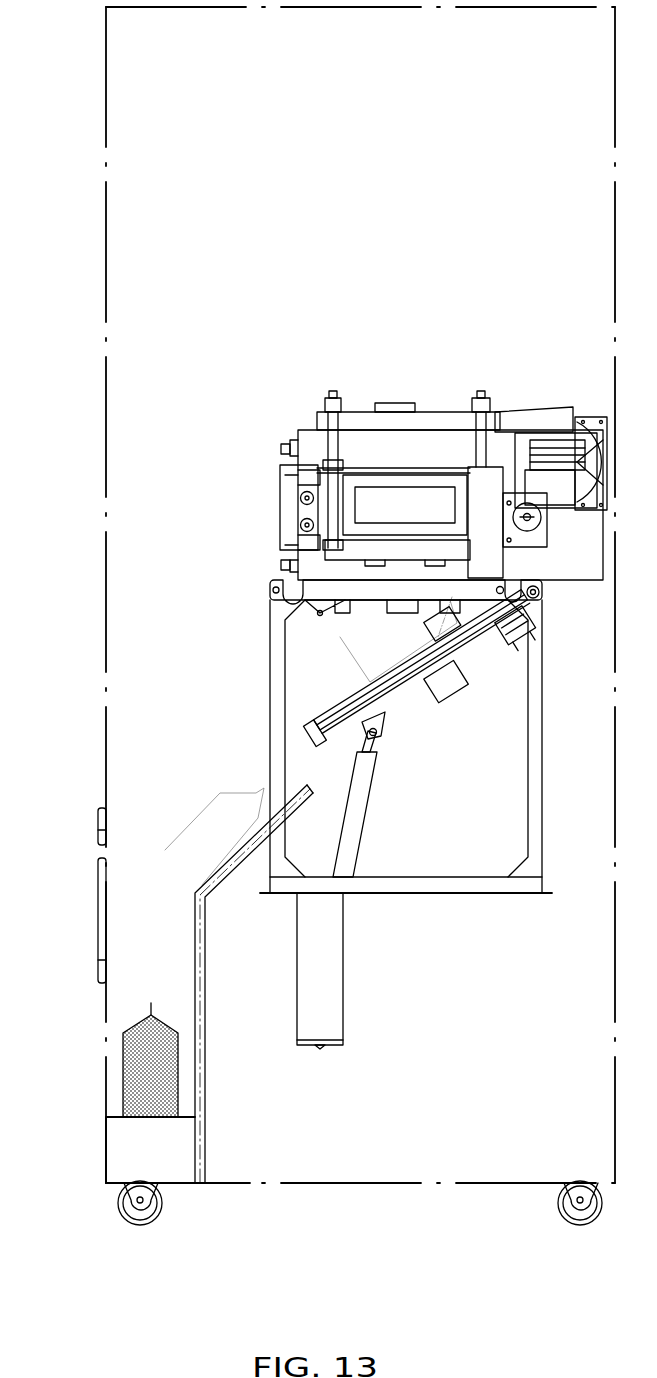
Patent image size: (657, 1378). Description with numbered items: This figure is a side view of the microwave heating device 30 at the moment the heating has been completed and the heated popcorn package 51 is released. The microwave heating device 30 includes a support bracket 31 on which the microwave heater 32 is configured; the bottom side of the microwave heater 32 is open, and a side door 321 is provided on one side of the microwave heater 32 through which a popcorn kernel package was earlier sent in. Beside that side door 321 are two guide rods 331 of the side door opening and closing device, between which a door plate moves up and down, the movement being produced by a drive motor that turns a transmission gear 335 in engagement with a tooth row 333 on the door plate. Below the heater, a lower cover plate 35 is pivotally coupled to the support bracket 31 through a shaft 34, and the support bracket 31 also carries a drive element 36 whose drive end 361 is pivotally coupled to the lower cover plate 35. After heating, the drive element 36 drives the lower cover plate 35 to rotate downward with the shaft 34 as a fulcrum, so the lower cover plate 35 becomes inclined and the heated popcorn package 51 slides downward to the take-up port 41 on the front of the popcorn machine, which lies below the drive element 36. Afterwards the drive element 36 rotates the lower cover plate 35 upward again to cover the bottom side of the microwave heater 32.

The microwave heating device 30 is at (280, 427).
The support bracket 31 is at (278, 718).
The microwave heater 32 is at (308, 433).
The side door 321 is at (383, 497).
The guide rods 331 is at (333, 508).
The tooth row 333 is at (503, 563).
The transmission gear 335 is at (541, 521).
The shaft 34 is at (540, 592).
The lower cover plate 35 is at (397, 688).
The drive element 36 is at (357, 817).
The drive end 361 is at (373, 745).
The take-up port 41 is at (98, 898).
The heated popcorn package 51 is at (140, 1068).